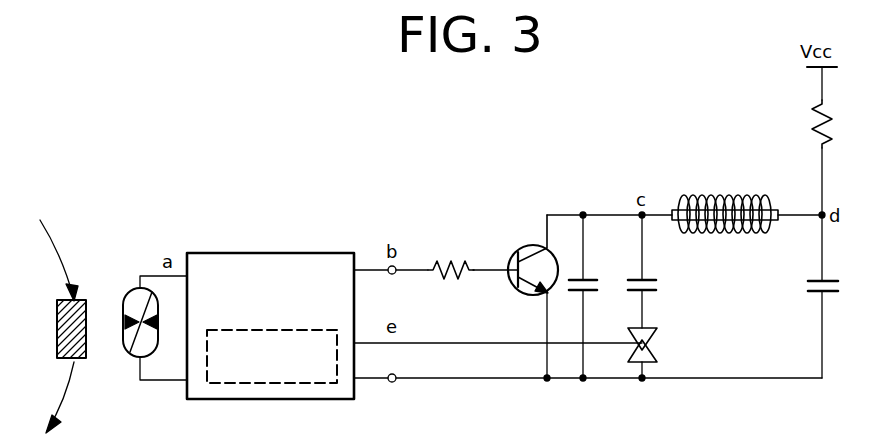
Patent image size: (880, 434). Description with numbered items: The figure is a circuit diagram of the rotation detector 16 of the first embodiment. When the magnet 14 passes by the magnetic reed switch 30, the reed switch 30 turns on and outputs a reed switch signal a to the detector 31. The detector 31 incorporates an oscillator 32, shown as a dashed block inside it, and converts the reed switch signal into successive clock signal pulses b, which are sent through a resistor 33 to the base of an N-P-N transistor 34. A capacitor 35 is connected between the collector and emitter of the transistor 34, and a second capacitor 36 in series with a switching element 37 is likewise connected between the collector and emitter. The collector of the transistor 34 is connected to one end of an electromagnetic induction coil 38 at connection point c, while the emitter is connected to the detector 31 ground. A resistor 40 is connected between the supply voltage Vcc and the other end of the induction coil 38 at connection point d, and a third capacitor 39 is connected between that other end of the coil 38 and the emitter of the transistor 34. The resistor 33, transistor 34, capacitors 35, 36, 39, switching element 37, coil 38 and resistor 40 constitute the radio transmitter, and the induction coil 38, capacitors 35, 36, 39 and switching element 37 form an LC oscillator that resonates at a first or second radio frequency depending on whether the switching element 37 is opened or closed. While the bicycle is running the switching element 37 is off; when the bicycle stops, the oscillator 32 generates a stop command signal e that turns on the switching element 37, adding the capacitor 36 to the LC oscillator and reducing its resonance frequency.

The magnet 14 is at (57, 323).
The rotation detector 16 is at (428, 176).
The magnetic reed switch 30 is at (125, 310).
The detector 31 is at (278, 252).
The oscillator 32 is at (283, 384).
The resistor 33 is at (449, 259).
The N-P-N transistor 34 is at (517, 246).
The capacitor 35 is at (590, 280).
The second capacitor 36 is at (658, 280).
The switching element 37 is at (658, 343).
The electromagnetic induction coil 38 is at (724, 195).
The third capacitor 39 is at (806, 284).
The resistor 40 is at (810, 128).